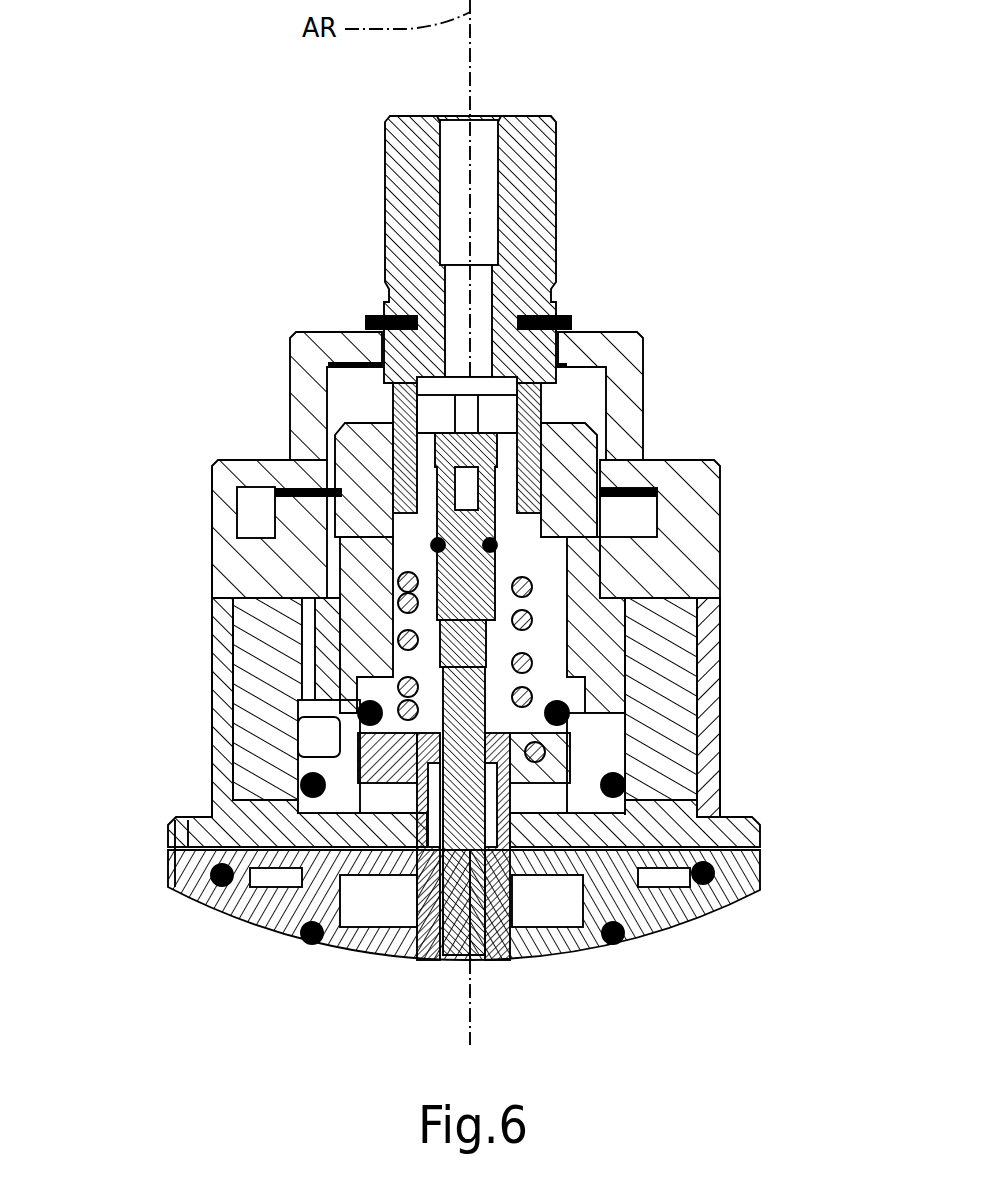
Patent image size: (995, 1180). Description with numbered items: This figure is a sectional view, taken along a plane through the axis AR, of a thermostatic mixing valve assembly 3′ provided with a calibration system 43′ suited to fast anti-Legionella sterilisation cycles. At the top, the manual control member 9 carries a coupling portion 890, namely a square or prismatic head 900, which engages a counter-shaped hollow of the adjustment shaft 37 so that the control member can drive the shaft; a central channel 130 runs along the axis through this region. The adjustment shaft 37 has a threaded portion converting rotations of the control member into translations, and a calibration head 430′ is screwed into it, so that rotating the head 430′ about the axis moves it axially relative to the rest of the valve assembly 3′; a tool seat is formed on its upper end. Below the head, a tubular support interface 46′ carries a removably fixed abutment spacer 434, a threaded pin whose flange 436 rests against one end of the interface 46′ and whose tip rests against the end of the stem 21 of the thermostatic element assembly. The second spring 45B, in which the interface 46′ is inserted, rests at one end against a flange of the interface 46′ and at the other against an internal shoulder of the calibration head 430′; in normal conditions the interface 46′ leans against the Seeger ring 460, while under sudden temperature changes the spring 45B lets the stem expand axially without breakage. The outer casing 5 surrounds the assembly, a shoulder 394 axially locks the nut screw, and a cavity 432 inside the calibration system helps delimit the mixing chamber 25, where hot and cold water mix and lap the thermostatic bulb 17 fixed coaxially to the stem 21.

The manual control member 9 is at (575, 215).
The central channel 130 is at (478, 190).
The coupling portion 890 is at (403, 407).
The square or prismatic head 900 is at (447, 365).
The nut 43′ is at (266, 340).
The valve housing 3′ is at (243, 430).
The calibration head 430′ is at (500, 420).
The adjustment shaft 37 is at (570, 470).
The abutment spacer 434 is at (437, 515).
The flange 436 is at (425, 595).
The outer casing 5 is at (222, 628).
The support interface 46′ is at (433, 657).
The cavity 432 is at (527, 647).
The second spring 45B is at (533, 617).
The shoulder 394 is at (682, 566).
The stem 21 is at (465, 818).
The Seeger ring 460 is at (562, 800).
The mixing chamber 25 is at (379, 905).
The thermostatic bulb 17 is at (433, 945).